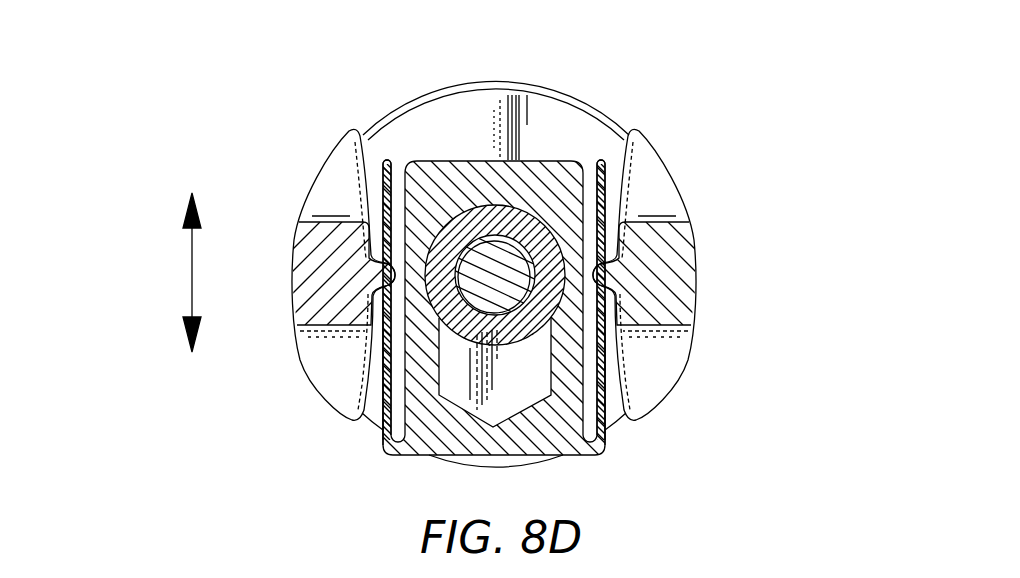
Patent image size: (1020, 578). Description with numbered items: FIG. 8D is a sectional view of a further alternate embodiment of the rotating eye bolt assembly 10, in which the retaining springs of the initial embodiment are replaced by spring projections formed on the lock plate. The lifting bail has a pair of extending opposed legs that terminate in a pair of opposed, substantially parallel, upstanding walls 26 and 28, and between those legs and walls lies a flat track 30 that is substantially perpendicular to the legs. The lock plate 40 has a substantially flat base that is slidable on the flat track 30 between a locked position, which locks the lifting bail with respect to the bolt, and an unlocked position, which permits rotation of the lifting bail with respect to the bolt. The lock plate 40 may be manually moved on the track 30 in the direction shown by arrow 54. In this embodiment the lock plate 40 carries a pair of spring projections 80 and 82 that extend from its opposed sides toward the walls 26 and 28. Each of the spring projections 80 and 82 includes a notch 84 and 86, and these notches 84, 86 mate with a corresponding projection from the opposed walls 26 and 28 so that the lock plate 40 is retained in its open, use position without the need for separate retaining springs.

The rotating eye bolt assembly 10 is at (707, 79).
The upstanding wall 26 is at (365, 377).
The upstanding wall 28 is at (623, 378).
The flat track 30 is at (578, 137).
The lock plate 40 is at (428, 170).
The arrow 54 is at (189, 272).
The spring projection 80 is at (383, 356).
The spring projection 82 is at (603, 362).
The notch 84 is at (395, 217).
The notch 86 is at (596, 218).